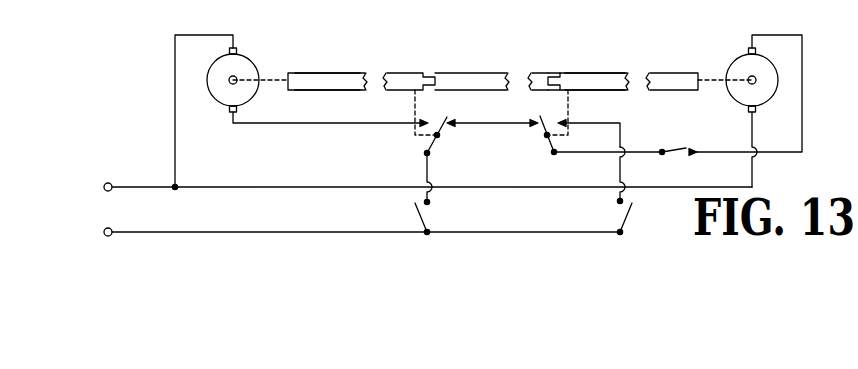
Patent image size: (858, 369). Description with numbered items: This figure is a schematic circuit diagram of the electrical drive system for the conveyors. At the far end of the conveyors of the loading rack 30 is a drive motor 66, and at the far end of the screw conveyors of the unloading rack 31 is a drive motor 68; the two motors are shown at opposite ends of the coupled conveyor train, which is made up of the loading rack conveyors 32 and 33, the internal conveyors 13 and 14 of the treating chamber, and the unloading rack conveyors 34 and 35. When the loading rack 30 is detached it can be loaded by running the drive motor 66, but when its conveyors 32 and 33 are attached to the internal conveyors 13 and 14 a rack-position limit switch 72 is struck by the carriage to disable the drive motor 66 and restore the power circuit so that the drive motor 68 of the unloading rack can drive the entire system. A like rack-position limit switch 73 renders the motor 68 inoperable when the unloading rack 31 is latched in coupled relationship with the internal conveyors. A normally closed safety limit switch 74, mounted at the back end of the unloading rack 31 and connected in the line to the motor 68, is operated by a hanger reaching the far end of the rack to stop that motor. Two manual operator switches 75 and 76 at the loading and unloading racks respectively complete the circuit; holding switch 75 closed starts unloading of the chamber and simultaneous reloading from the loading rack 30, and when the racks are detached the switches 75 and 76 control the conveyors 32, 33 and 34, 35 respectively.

The internal conveyor 13 is at (480, 71).
The internal conveyor 14 is at (519, 72).
The loading rack 30 is at (339, 95).
The unloading rack 31 is at (627, 98).
The conveyor 32 is at (358, 70).
The conveyor 33 is at (377, 73).
The conveyor 34 is at (613, 70).
The conveyor 35 is at (638, 72).
The drive motor 66 is at (254, 63).
The drive motor 68 is at (740, 61).
The rack-position limit switch 72 is at (409, 145).
The rack-position limit switch 73 is at (533, 145).
The safety limit switch 74 is at (686, 146).
The operator switch 75 is at (431, 212).
The operator switch 76 is at (616, 213).